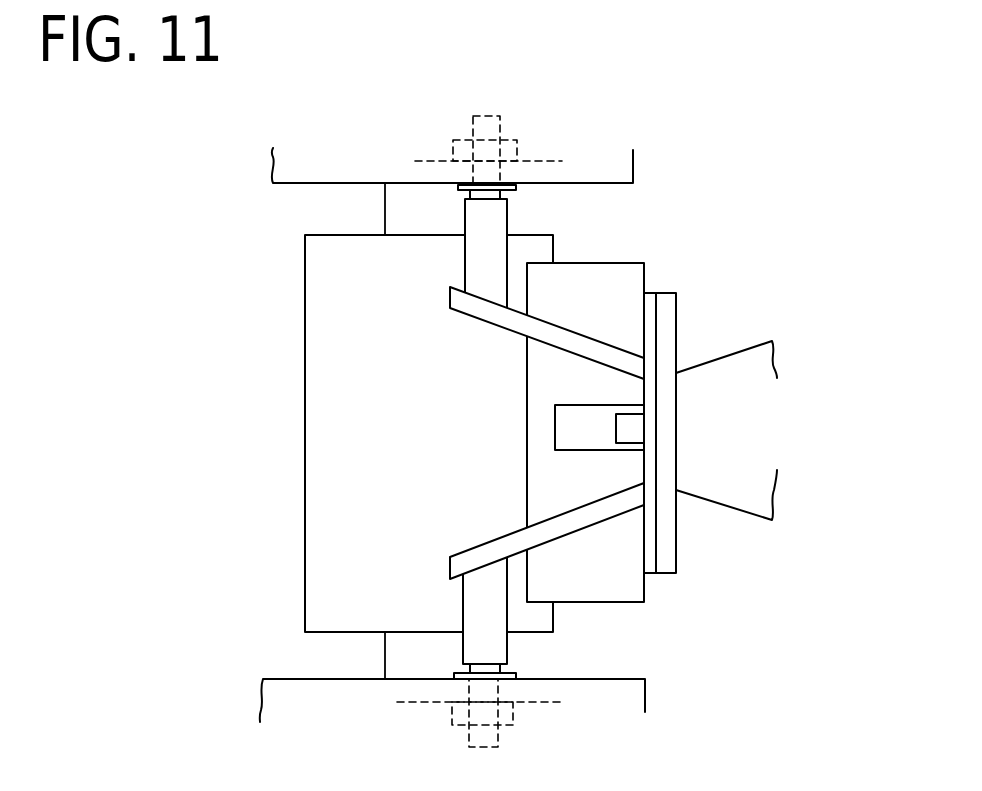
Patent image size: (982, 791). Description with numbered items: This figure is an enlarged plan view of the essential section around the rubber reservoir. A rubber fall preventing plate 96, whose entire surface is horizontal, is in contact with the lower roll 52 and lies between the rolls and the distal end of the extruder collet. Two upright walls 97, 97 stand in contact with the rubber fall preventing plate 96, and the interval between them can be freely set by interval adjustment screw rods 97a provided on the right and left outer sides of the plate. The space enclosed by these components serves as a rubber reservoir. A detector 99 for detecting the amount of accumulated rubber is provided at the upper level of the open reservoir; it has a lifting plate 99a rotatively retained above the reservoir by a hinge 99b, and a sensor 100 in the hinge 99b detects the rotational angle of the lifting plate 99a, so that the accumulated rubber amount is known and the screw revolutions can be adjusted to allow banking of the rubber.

The lower roll 52 is at (315, 428).
The rubber fall preventing plate 96 is at (618, 270).
The upright wall 97 is at (573, 332).
The interval adjustment screw rod 97a is at (495, 197).
The detector 99 is at (610, 383).
The lifting plate 99a is at (588, 437).
The hinge 99b is at (642, 443).
The sensor 100 is at (633, 428).